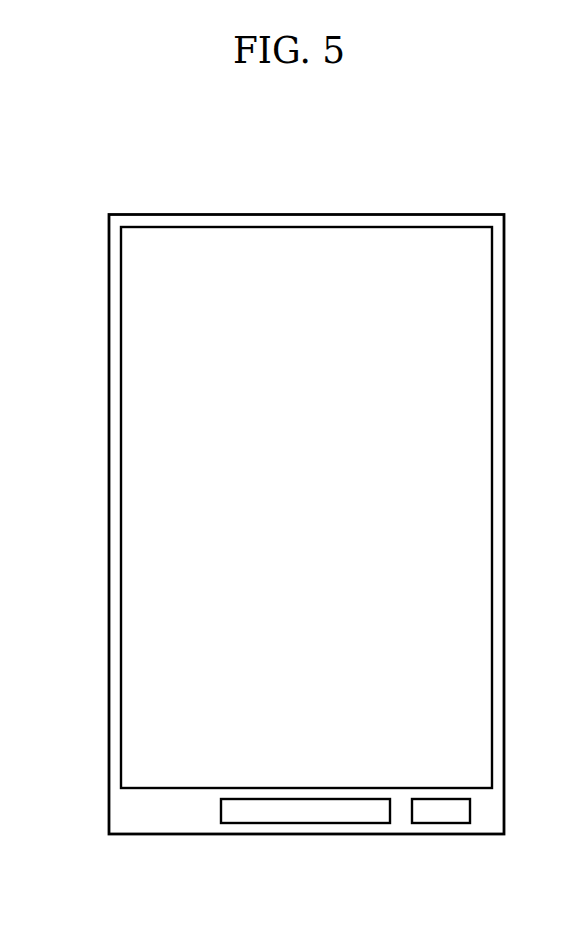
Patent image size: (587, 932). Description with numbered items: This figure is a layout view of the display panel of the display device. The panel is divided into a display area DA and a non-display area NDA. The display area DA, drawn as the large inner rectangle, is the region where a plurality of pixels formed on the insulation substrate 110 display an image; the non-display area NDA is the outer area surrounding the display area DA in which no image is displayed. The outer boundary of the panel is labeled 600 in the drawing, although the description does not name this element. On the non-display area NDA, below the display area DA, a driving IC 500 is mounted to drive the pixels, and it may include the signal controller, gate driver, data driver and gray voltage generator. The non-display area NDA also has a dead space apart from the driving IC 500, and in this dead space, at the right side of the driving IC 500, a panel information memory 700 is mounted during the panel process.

The insulation substrate 110 is at (109, 374).
The encapsulation layer 600 is at (457, 226).
The display area DA is at (141, 624).
The non-display area NDA is at (127, 800).
The driving IC 500 is at (305, 823).
The panel information memory 700 is at (441, 823).